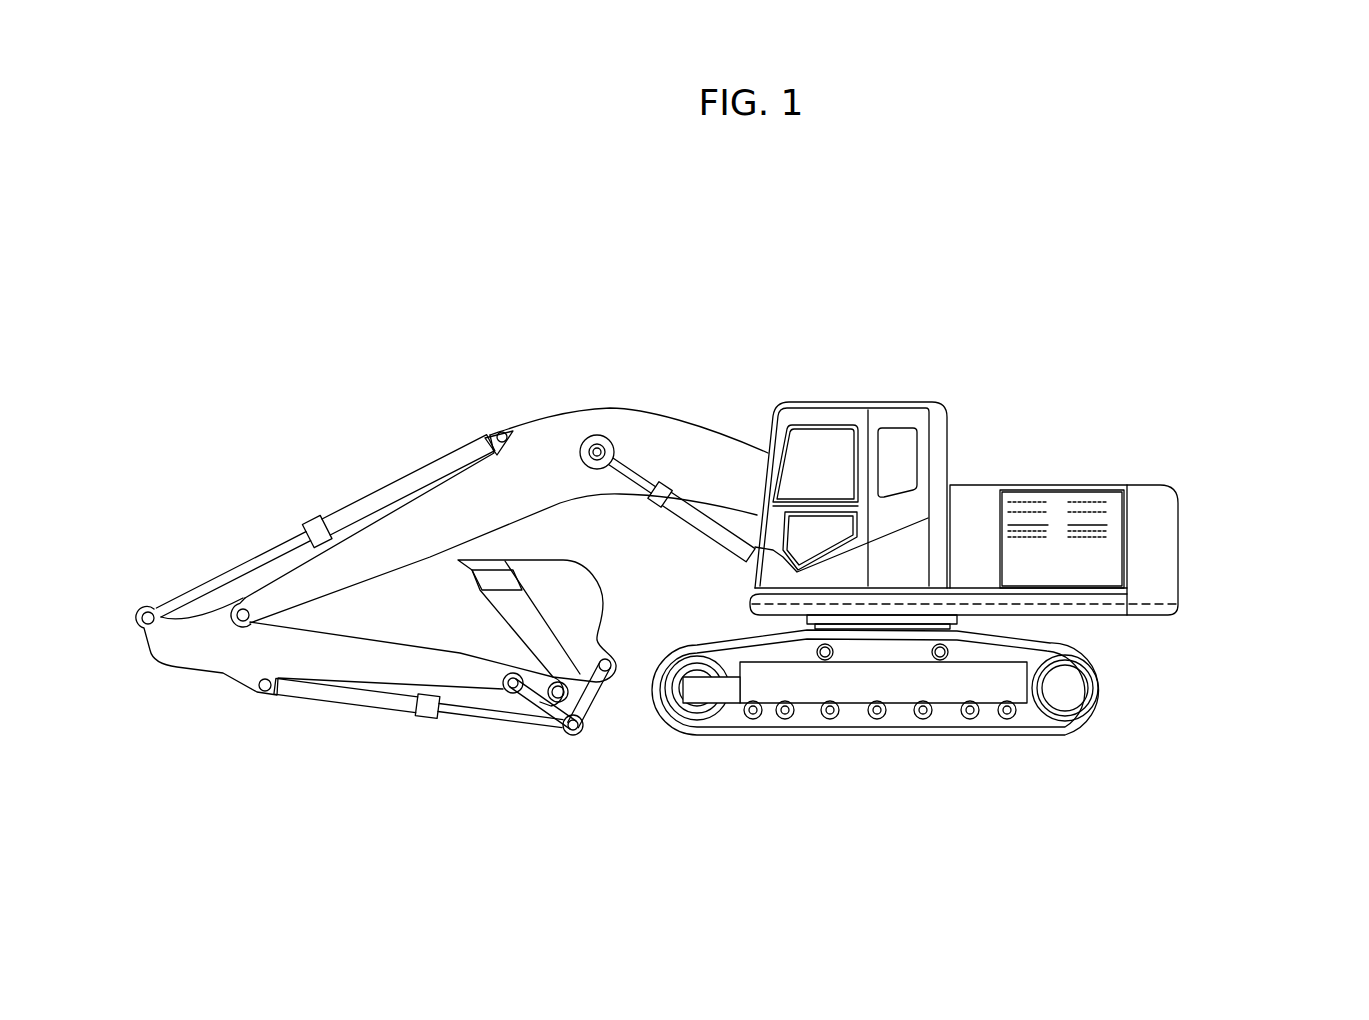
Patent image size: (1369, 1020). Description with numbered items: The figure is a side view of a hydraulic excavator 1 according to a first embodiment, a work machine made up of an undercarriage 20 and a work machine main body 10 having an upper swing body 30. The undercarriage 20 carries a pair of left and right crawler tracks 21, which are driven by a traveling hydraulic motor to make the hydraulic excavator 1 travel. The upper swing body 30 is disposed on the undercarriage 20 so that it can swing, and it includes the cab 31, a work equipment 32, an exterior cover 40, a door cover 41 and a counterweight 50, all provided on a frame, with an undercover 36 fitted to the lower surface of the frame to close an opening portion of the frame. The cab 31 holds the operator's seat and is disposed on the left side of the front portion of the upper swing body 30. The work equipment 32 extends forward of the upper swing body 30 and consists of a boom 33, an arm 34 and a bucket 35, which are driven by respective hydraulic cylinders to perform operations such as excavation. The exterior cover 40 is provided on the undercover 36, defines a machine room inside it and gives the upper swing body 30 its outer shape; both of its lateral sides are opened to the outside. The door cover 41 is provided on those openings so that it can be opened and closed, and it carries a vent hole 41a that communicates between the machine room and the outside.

The hydraulic excavator 1 is at (1143, 254).
The work machine main body 10 is at (962, 363).
The undercarriage 20 is at (1095, 733).
The crawler tracks 21 is at (1105, 668).
The upper swing body 30 is at (1165, 480).
The cab 31 is at (838, 412).
The work equipment 32 is at (540, 397).
The boom 33 is at (467, 493).
The arm 34 is at (348, 650).
The bucket 35 is at (583, 597).
The undercover 36 is at (1157, 606).
The exterior cover 40 is at (970, 502).
The door cover 41 is at (1112, 550).
The vent hole 41a is at (1080, 497).
The counterweight 50 is at (1167, 510).